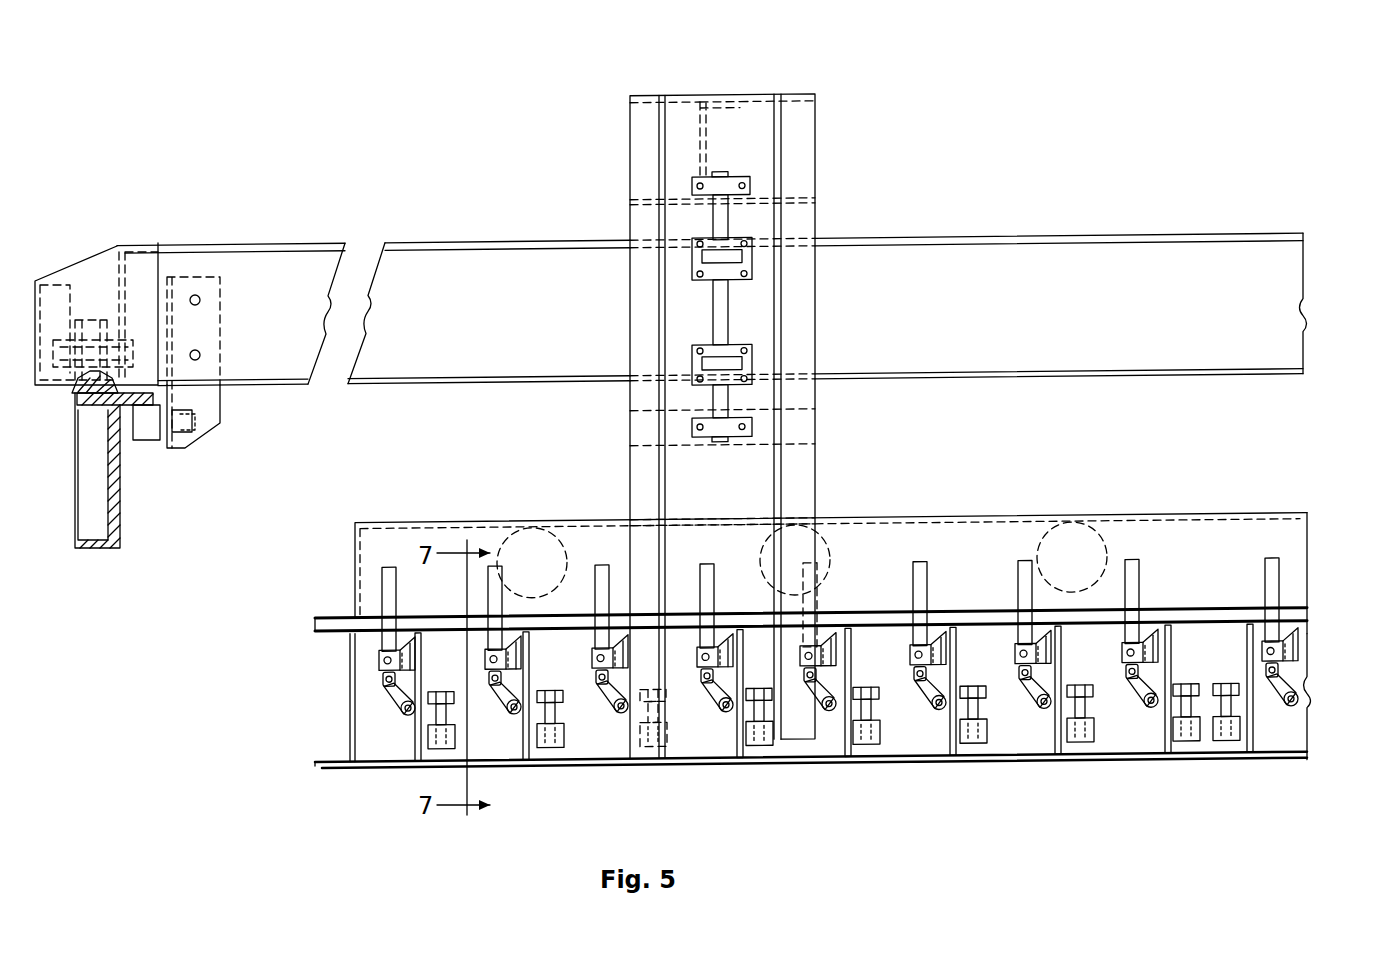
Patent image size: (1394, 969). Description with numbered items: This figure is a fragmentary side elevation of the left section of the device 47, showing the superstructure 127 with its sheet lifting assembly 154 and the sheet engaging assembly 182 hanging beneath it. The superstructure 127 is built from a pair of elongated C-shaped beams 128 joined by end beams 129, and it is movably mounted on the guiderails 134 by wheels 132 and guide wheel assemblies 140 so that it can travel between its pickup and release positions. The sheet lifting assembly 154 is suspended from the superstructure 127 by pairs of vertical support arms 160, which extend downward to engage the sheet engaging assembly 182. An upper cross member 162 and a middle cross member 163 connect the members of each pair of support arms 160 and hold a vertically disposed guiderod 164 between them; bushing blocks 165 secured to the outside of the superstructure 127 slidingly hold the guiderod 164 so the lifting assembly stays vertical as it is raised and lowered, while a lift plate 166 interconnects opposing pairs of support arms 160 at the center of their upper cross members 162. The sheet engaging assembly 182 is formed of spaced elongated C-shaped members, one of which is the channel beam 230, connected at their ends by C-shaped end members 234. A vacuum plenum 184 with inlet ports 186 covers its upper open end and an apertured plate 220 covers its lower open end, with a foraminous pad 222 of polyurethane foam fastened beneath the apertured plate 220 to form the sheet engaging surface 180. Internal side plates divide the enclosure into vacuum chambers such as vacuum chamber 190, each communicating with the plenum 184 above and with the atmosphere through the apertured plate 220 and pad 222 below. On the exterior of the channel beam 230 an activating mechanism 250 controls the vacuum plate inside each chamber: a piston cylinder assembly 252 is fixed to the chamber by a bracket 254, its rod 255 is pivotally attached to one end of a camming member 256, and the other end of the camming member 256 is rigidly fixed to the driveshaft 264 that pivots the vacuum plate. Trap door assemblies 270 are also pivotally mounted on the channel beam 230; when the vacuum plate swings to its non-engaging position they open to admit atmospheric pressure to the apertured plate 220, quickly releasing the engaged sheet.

The rack assembly 47 is at (958, 198).
The superstructure 127 is at (1141, 228).
The C-shaped beam 128 is at (474, 327).
The end beam 129 is at (137, 250).
The wheel 132 is at (100, 323).
The guiderail 134 is at (92, 389).
The guide wheel assembly 140 is at (215, 427).
The sheet lifting assembly 154 is at (248, 548).
The vertical support arm 160 is at (640, 468).
The upper cross member 162 is at (762, 147).
The middle cross member 163 is at (830, 428).
The guiderod 164 is at (718, 220).
The bushing block 165 is at (690, 262).
The lift plate 166 is at (703, 100).
The sheet engaging surface 180 is at (375, 775).
The sheet engaging assembly 182 is at (1338, 600).
The vacuum plenum 184 is at (1188, 540).
The inlet port 186 is at (498, 516).
The vacuum chamber 190 is at (508, 737).
The apertured plate 220 is at (1265, 755).
The foraminous pad 222 is at (1200, 758).
The elongated C-shaped member 230 is at (1315, 657).
The C-shaped end member 234 is at (352, 718).
The activating mechanism 250 is at (372, 605).
The piston cylinder assembly 252 is at (380, 660).
The bracket 254 is at (390, 650).
The rod 255 is at (382, 678).
The camming member 256 is at (405, 707).
The driveshaft 264 is at (412, 712).
The trap door assembly 270 is at (537, 755).